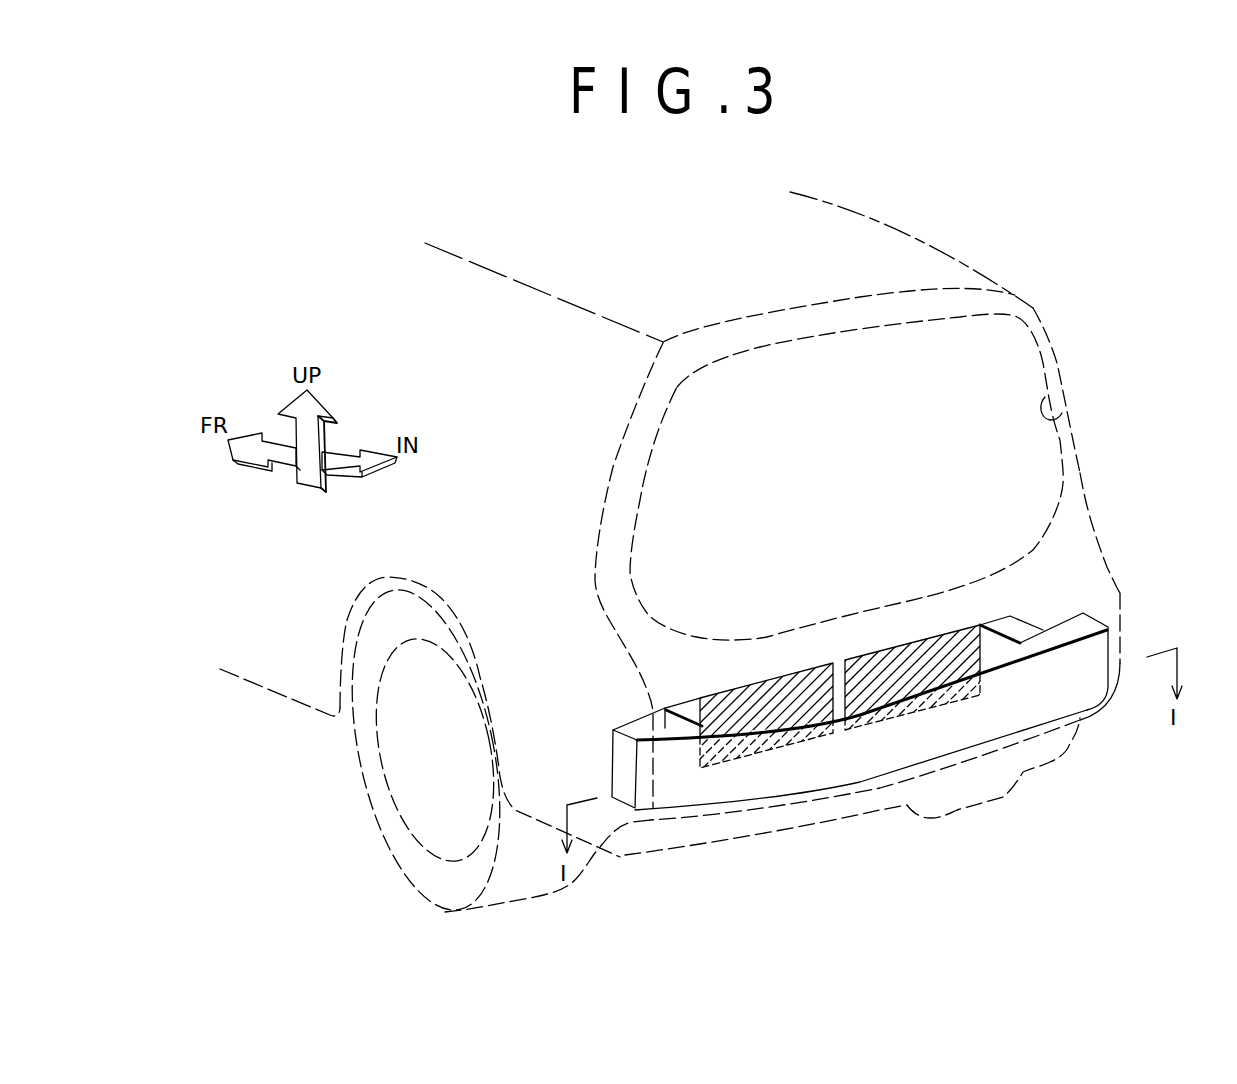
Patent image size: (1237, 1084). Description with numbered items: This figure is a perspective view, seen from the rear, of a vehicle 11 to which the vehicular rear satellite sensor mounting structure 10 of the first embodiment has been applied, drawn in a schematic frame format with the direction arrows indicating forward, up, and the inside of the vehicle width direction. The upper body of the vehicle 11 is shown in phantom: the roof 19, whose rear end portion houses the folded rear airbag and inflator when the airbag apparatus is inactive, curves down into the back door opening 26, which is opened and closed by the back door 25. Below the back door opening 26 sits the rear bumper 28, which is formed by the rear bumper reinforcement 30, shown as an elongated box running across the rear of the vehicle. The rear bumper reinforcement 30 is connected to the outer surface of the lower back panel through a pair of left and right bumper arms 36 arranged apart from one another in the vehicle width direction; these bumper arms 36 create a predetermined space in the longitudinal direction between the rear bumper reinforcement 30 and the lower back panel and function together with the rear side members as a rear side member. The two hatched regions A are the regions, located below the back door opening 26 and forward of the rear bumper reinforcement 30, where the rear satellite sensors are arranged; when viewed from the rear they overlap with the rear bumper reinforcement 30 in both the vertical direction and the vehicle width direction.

The vehicular rear satellite sensor mounting structure 10 is at (1095, 603).
The vehicle 11 is at (1001, 265).
The roof 19 is at (870, 243).
The back door 25 is at (1033, 473).
The back door opening 26 is at (1062, 413).
The rear bumper 28 is at (1122, 667).
The rear bumper reinforcement 30 is at (883, 760).
The bumper arms 36 is at (1003, 620).
The regions A is at (778, 693).